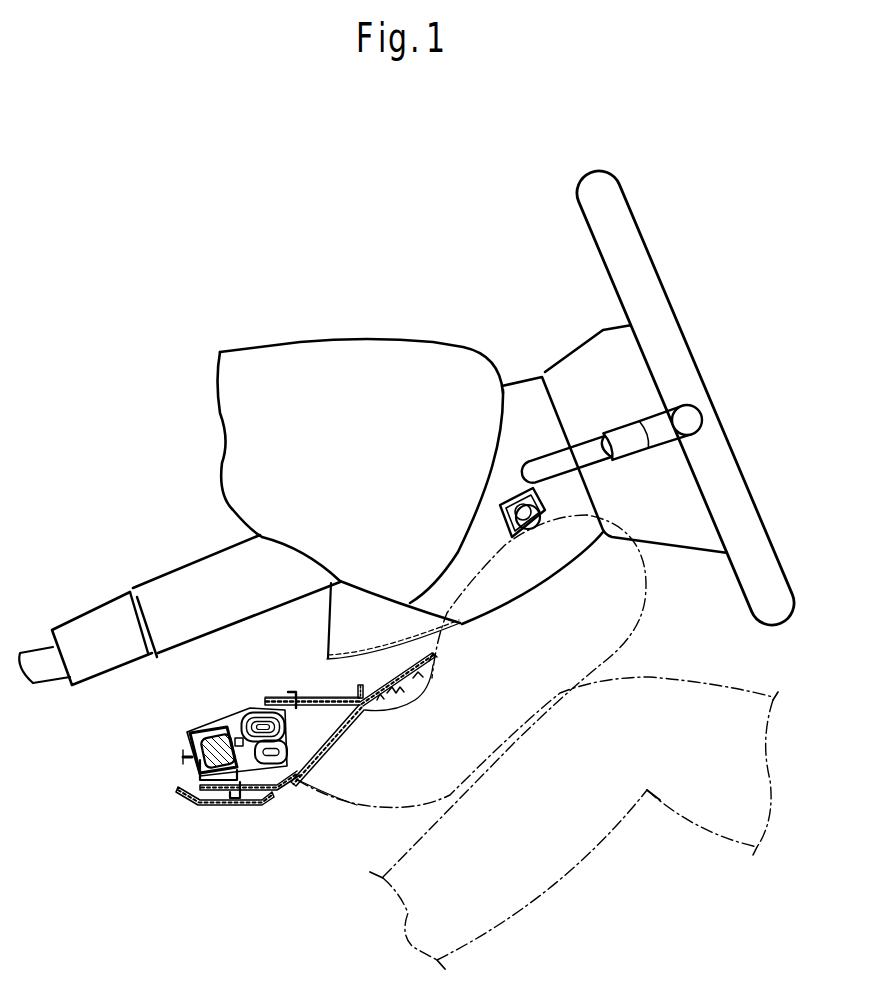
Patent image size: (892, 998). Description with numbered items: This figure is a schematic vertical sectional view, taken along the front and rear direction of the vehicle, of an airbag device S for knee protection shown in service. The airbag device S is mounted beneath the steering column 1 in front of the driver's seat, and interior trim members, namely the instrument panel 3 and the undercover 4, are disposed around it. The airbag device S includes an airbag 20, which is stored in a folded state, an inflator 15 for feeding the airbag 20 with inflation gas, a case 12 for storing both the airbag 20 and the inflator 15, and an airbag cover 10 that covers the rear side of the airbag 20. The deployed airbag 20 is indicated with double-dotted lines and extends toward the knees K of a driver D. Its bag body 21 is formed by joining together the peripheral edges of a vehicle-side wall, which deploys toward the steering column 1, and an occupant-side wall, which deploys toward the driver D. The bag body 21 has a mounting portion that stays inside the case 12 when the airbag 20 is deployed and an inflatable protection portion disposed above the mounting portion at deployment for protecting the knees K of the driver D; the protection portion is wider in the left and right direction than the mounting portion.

The steering column 1 is at (513, 367).
The instrument panel 3 is at (432, 680).
The undercover 4 is at (232, 803).
The airbag cover 10 is at (339, 688).
The case 12 is at (237, 708).
The inflator 15 is at (192, 770).
The airbag 20 is at (288, 765).
The bag body 21 is at (657, 573).
The airbag device S is at (157, 773).
The knees K is at (640, 698).
The driver D is at (695, 833).